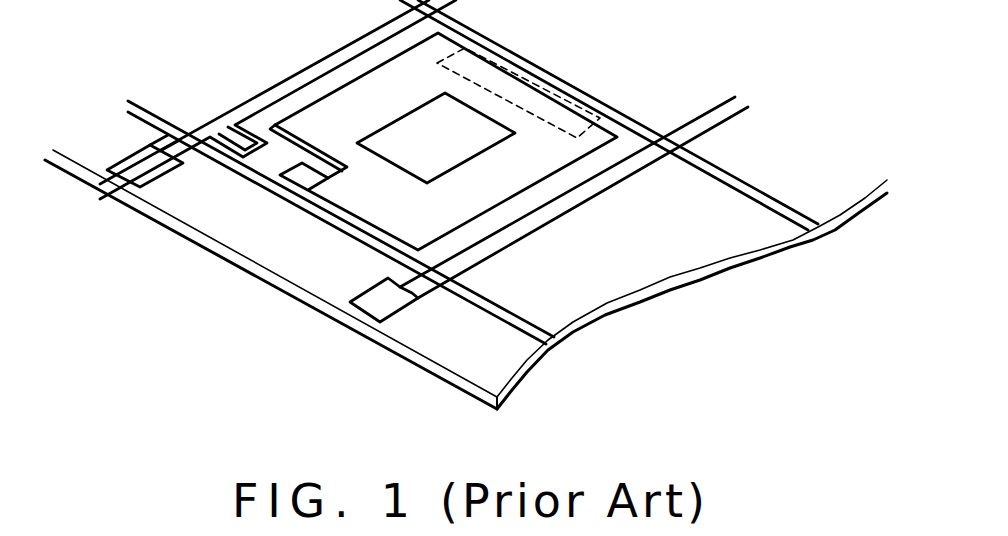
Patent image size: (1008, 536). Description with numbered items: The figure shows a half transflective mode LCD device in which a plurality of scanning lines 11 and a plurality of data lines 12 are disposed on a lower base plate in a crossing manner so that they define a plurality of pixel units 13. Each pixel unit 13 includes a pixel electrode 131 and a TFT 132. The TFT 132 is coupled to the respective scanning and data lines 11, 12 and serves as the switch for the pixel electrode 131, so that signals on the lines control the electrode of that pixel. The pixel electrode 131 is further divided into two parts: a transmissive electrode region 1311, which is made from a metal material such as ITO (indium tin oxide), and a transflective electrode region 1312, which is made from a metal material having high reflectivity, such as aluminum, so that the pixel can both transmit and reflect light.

The scanning line 11 is at (547, 332).
The data line 12 is at (543, 212).
The pixel unit 13 is at (360, 68).
The pixel electrode 131 is at (610, 128).
The transmissive electrode region 1311 is at (483, 112).
The transflective electrode region 1312 is at (458, 88).
The TFT 132 is at (285, 155).